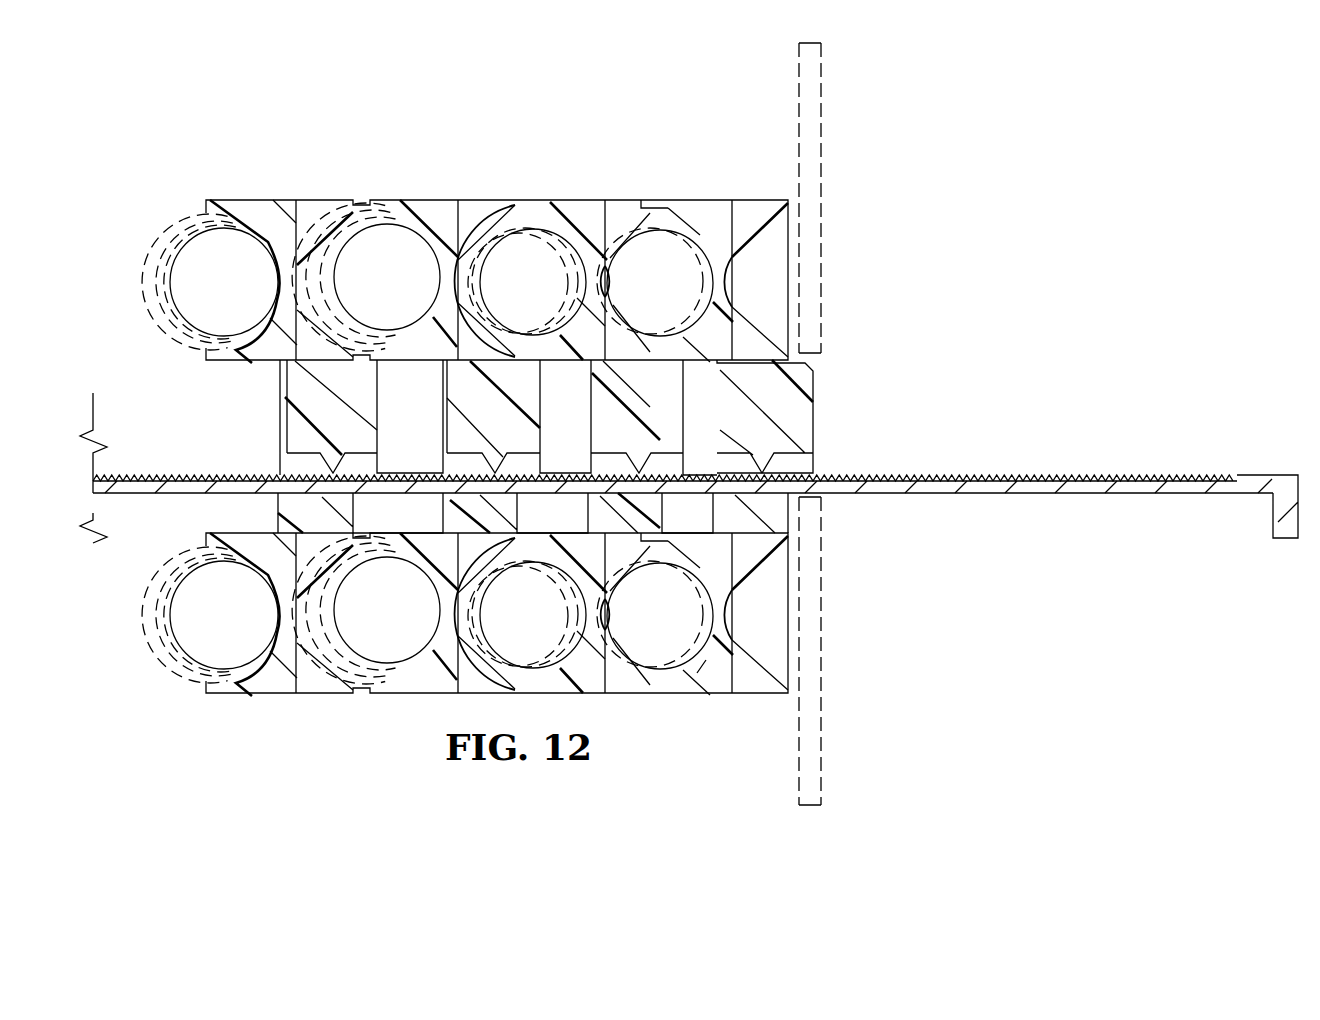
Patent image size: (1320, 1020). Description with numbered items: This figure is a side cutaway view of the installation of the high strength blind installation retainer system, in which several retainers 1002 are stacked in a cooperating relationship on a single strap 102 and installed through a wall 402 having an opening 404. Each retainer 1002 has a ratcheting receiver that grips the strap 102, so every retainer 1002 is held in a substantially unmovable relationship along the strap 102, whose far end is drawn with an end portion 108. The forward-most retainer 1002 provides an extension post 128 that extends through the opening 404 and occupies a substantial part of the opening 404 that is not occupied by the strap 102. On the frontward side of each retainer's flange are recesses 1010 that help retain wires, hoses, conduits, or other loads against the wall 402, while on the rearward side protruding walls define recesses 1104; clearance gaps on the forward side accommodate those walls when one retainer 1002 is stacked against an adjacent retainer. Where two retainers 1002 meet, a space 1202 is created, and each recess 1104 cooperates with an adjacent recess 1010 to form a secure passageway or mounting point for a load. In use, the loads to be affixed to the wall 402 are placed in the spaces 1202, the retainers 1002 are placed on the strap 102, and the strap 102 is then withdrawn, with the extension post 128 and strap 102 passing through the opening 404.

The strap 102 is at (1088, 493).
The rod end stop 108 is at (1287, 540).
The extension post 128 is at (813, 420).
The wall 402 is at (823, 128).
The opening 404 is at (830, 356).
The retainer 1002 is at (242, 200).
The recess 1010 is at (605, 292).
The recess 1104 is at (688, 712).
The space 1202 is at (683, 297).